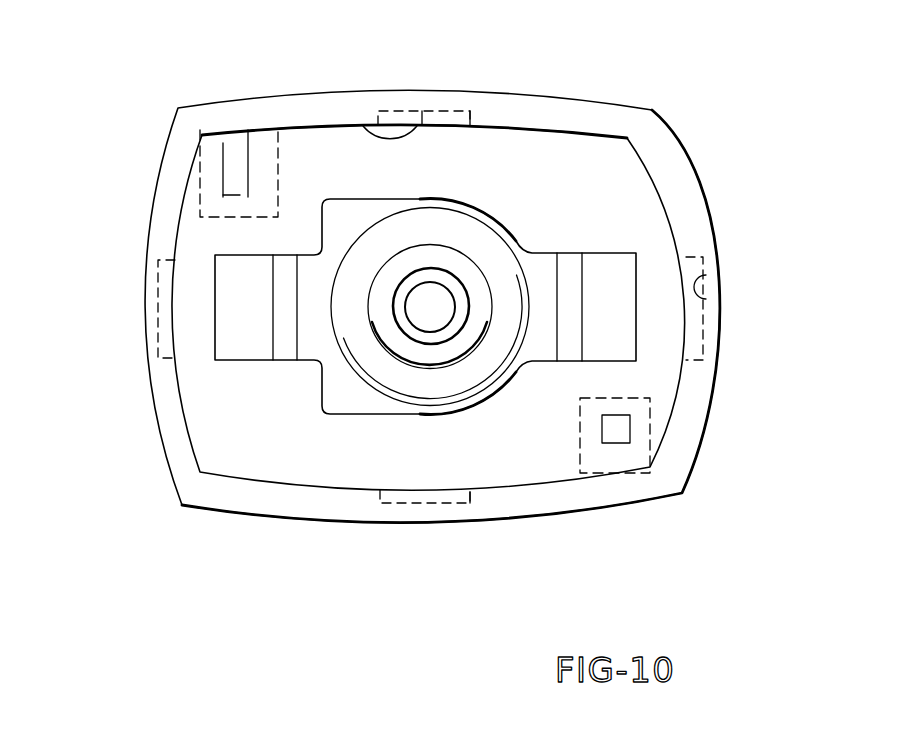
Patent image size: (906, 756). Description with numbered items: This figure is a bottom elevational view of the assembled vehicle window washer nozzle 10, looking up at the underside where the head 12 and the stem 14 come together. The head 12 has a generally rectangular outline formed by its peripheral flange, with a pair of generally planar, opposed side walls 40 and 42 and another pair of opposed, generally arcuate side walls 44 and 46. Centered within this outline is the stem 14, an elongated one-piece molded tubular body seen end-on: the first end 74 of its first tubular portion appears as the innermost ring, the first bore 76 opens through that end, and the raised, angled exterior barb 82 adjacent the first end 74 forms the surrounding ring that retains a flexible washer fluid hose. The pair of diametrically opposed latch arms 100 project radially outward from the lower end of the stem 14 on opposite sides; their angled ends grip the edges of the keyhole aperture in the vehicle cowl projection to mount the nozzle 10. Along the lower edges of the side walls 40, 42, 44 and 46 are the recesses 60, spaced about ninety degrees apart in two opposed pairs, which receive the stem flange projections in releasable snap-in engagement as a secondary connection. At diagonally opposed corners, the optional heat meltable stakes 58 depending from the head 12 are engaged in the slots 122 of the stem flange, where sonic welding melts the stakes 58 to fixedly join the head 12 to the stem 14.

The vehicle window washer nozzle 10 is at (178, 82).
The head 12 is at (487, 95).
The stem 14 is at (565, 190).
The side wall 40 is at (266, 502).
The side wall 42 is at (512, 104).
The side wall 44 is at (147, 301).
The side wall 46 is at (697, 420).
The heat meltable stakes 58 is at (232, 165).
The recesses 60 is at (368, 128).
The first end 74 is at (430, 337).
The first bore 76 is at (427, 326).
The exterior barb 82 is at (383, 347).
The arms 100 is at (238, 343).
The slots 122 is at (236, 187).